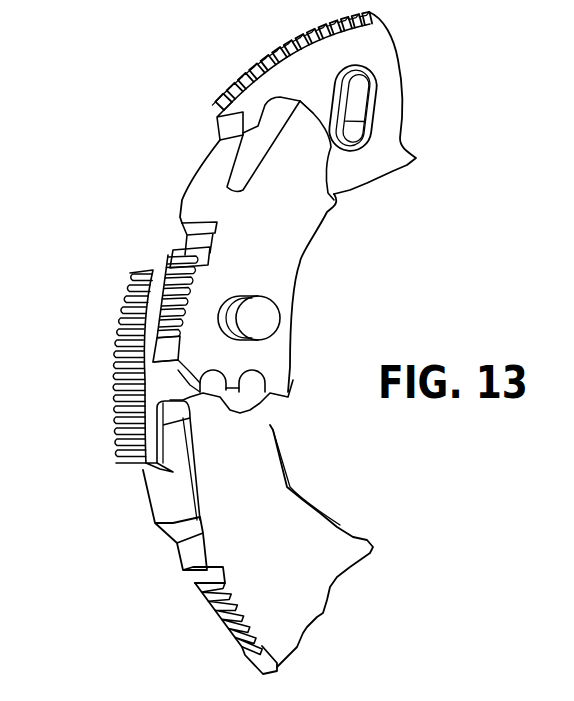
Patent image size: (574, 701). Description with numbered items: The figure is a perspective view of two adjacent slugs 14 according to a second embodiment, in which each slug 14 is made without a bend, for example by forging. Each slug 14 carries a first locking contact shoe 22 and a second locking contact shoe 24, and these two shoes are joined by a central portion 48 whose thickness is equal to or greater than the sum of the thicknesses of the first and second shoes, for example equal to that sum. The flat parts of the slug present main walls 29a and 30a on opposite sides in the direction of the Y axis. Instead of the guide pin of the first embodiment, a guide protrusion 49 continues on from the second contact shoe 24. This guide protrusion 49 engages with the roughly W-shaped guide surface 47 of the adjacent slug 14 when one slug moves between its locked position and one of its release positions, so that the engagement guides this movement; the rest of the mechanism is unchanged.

The slug 14 is at (131, 103).
The first locking contact shoe 22 is at (360, 50).
The second locking contact shoe 24 is at (283, 260).
The main wall 29a is at (388, 121).
The main wall 30a is at (283, 293).
The guide surface 47 is at (255, 408).
The central portion 48 is at (227, 163).
The guide protrusion 49 is at (334, 148).